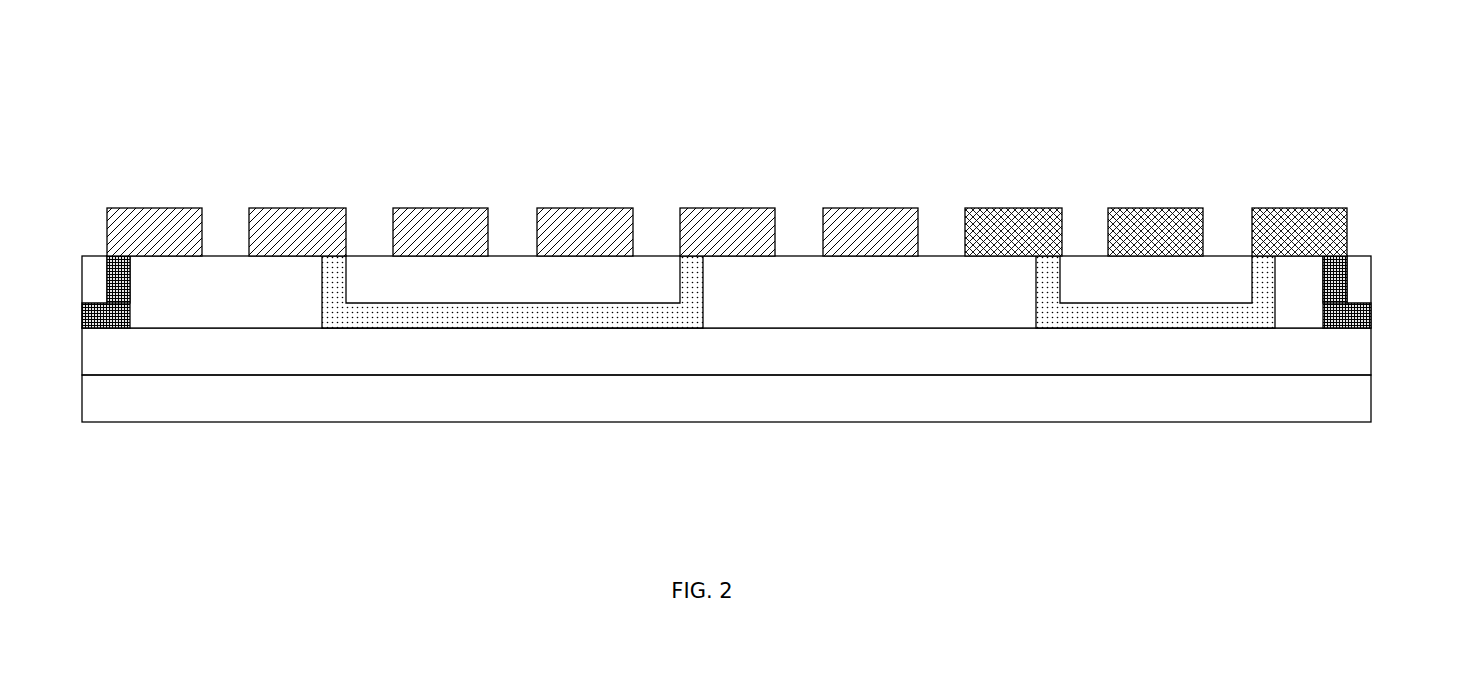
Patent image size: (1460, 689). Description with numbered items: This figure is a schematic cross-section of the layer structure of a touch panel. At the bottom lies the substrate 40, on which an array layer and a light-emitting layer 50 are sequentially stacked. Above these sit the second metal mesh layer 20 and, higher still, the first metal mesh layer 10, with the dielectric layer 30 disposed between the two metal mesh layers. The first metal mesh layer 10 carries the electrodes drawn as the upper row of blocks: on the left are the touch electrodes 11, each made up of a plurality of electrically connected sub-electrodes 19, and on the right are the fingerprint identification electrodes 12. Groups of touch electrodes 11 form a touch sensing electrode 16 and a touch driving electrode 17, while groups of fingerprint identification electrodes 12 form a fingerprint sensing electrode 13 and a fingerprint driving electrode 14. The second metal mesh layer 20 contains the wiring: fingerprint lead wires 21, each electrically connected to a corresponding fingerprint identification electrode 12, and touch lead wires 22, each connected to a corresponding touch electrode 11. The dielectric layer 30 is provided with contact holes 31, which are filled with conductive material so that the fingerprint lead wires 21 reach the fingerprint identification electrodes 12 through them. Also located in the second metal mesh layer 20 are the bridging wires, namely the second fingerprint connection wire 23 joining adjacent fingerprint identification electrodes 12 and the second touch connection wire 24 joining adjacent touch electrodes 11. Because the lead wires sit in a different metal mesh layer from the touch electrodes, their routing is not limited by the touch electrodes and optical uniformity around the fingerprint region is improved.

The first metal mesh layer 10 is at (767, 256).
The touch electrode 11 is at (512, 162).
The fingerprint identification electrode 12 is at (1025, 208).
The fingerprint sensing electrode 13 is at (1155, 235).
The fingerprint driving electrode 14 is at (1167, 281).
The touch sensing electrode 16 is at (602, 249).
The touch driving electrode 17 is at (512, 256).
The sub-electrode 19 is at (172, 208).
The second metal mesh layer 20 is at (767, 374).
The fingerprint lead wire 21 is at (1346, 316).
The touch lead wire 22 is at (117, 320).
The second fingerprint connection wire 23 is at (1050, 315).
The second touch connection wire 24 is at (513, 316).
The dielectric layer 30 is at (1358, 280).
The contact hole 31 is at (127, 293).
The substrate 40 is at (1358, 410).
The light-emitting layer 50 is at (1358, 362).